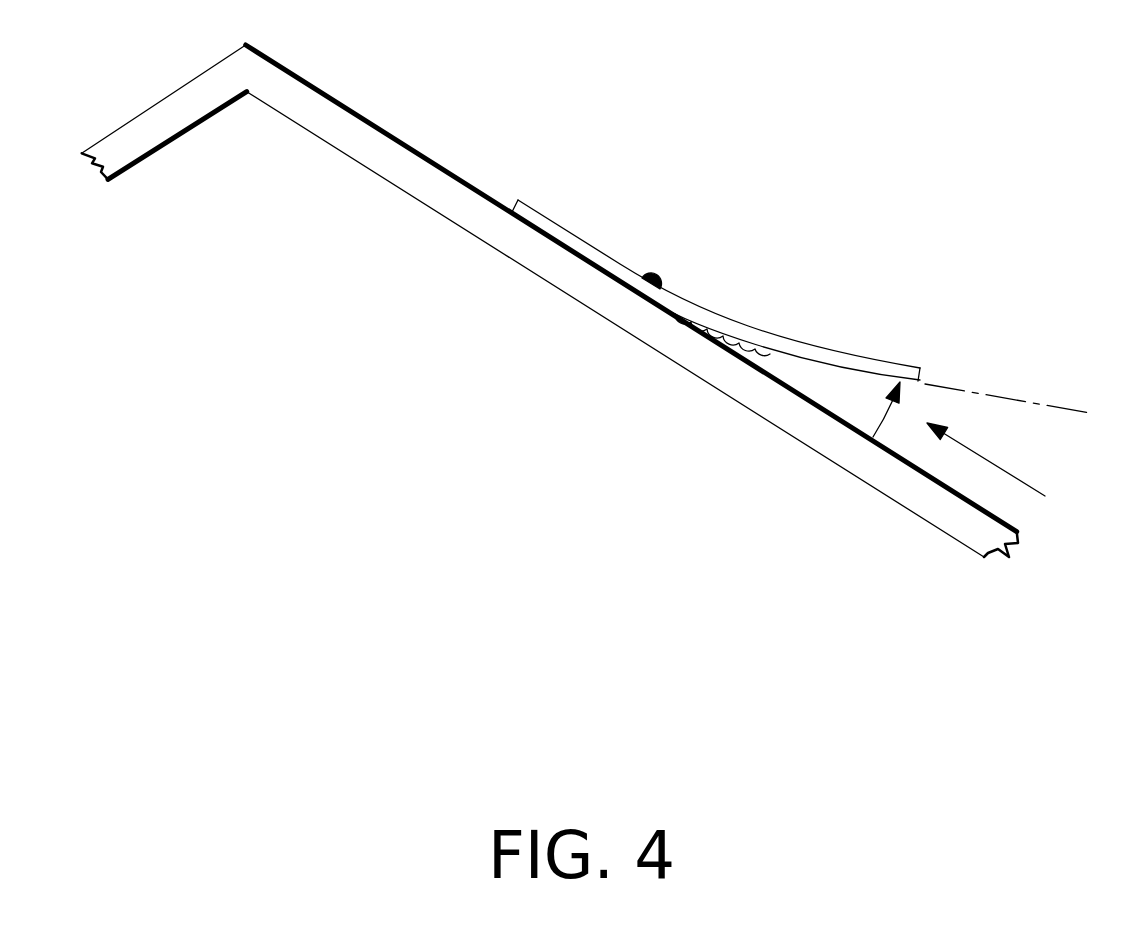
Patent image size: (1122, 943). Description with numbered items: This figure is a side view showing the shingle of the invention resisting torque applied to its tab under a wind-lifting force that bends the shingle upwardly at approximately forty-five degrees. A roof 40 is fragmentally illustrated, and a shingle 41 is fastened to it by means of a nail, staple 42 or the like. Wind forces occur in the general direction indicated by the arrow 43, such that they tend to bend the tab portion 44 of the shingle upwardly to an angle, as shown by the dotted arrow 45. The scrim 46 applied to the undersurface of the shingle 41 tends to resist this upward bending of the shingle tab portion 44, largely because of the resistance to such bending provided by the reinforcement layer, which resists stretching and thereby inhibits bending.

The roof 40 is at (307, 105).
The shingle 41 is at (558, 224).
The nail, staple 42 is at (660, 281).
The arrow 43 is at (1007, 470).
The tab portion 44 is at (893, 370).
The dotted arrow 45 is at (883, 423).
The scrim 46 is at (762, 352).